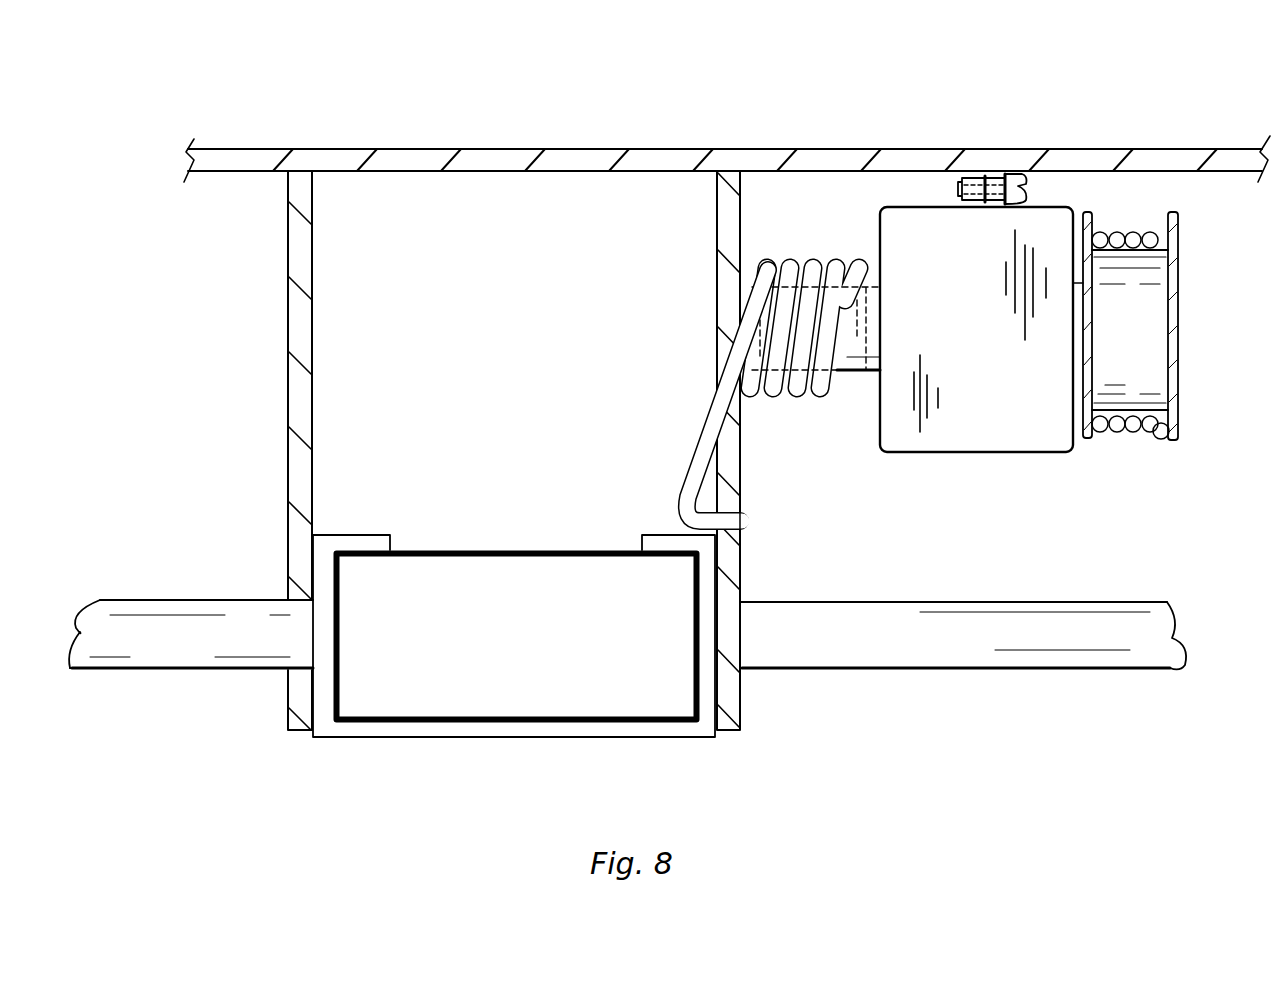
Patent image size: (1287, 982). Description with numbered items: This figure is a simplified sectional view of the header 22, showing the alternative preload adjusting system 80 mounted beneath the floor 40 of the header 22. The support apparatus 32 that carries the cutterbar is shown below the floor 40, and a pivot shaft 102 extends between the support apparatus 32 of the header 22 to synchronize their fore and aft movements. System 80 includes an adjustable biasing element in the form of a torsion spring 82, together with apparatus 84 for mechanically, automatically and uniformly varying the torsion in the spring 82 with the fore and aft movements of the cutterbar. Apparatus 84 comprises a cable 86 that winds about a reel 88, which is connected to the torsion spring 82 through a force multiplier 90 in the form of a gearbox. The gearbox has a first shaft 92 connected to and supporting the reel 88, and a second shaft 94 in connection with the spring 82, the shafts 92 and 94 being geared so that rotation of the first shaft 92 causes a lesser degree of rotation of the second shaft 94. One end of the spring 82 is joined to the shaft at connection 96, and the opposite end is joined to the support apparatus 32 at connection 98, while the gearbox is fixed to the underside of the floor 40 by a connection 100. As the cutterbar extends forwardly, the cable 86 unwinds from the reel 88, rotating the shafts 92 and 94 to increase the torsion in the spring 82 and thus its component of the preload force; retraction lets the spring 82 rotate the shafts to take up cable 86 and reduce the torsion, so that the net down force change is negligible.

The header 22 is at (1190, 151).
The floor 40 is at (822, 148).
The support apparatus 32 is at (388, 739).
The pivot shaft 102 is at (952, 672).
The connection 98 is at (742, 516).
The torsion spring 82 is at (797, 392).
The second shaft 94 is at (855, 380).
The connection 96 is at (865, 334).
The force multiplier 90 is at (1002, 455).
The connection 100 is at (962, 186).
The first shaft 92 is at (1078, 283).
The preload adjusting system 80 is at (1181, 355).
The reel 88 is at (1178, 367).
The apparatus for varying torsion 84 is at (1178, 437).
The cable 86 is at (1132, 433).